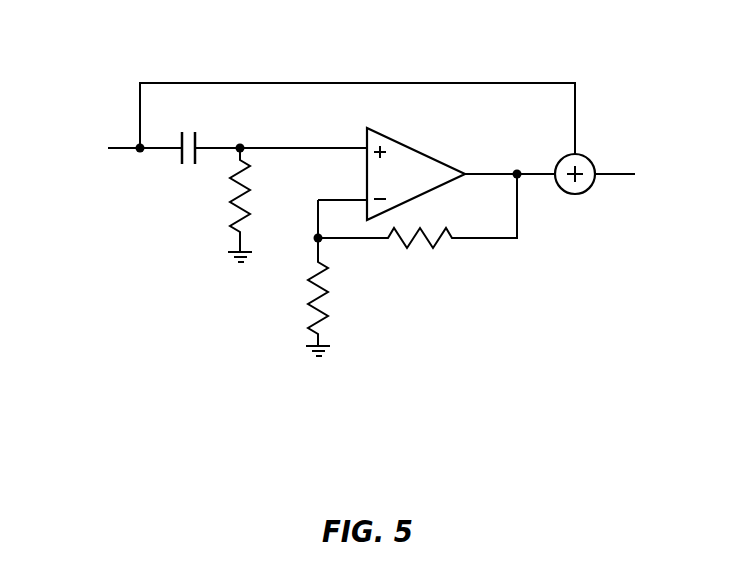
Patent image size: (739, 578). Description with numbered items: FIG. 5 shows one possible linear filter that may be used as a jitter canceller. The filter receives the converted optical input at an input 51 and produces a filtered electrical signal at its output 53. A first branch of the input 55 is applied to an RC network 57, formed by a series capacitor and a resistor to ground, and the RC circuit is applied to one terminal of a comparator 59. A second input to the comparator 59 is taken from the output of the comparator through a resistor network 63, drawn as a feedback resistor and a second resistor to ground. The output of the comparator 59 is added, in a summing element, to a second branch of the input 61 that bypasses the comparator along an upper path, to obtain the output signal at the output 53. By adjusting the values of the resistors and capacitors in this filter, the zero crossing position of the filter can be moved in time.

The input 51 is at (85, 122).
The output 53 is at (672, 150).
The first branch of the input 55 is at (167, 150).
The RC network 57 is at (217, 287).
The comparator 59 is at (432, 158).
The second branch of the input 61 is at (355, 82).
The resistor network 63 is at (418, 325).